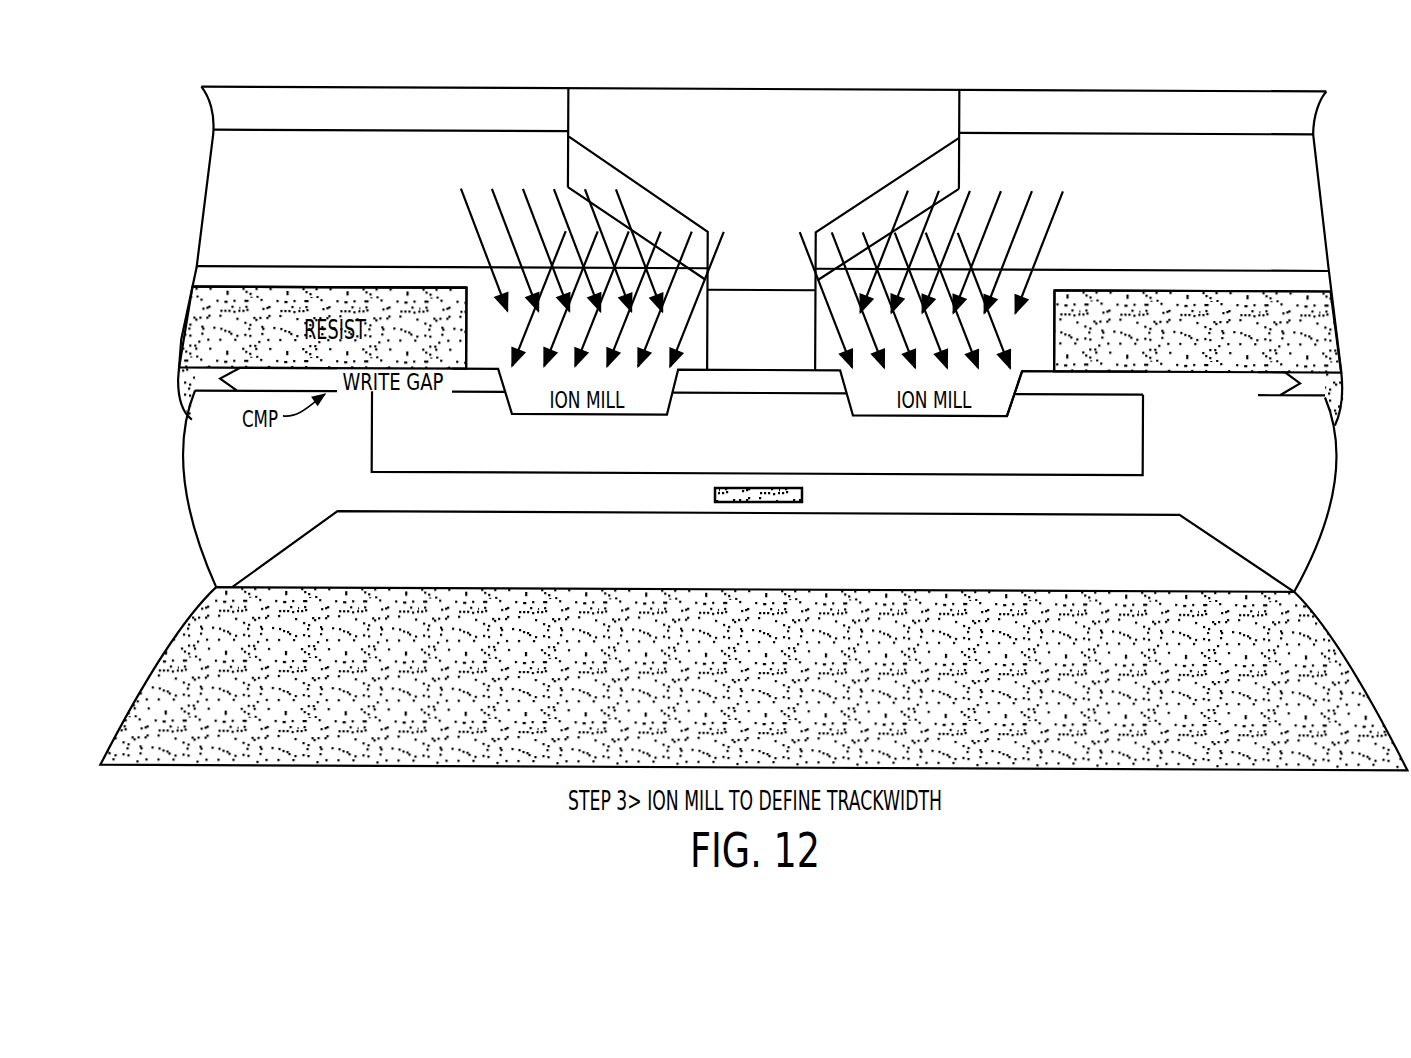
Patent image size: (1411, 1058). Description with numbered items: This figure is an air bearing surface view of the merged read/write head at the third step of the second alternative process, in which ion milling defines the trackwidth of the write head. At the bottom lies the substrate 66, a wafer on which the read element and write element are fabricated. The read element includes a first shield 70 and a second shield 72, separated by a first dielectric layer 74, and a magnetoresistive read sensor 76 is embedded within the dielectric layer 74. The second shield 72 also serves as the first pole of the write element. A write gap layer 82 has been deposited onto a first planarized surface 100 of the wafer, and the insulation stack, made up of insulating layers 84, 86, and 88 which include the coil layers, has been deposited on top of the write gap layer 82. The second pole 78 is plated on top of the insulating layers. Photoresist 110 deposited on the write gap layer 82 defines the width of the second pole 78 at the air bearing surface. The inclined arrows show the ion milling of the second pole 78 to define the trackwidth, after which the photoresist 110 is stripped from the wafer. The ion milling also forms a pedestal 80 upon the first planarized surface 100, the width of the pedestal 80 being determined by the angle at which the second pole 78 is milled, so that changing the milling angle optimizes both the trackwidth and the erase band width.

The substrate 66 is at (1312, 628).
The first shield 70 is at (1213, 563).
The second shield 72 is at (1125, 445).
The first dielectric layer 74 is at (1318, 503).
The magnetoresistive read sensor 76 is at (763, 502).
The second pole 78 is at (758, 107).
The pedestal 80 is at (693, 408).
The write gap layer 82 is at (1088, 387).
The insulating layer 84 is at (1323, 282).
The insulating layer 86 is at (1307, 198).
The insulating layer 88 is at (1300, 105).
The first planarized surface 100 is at (1132, 397).
The photoresist 110 is at (1323, 335).